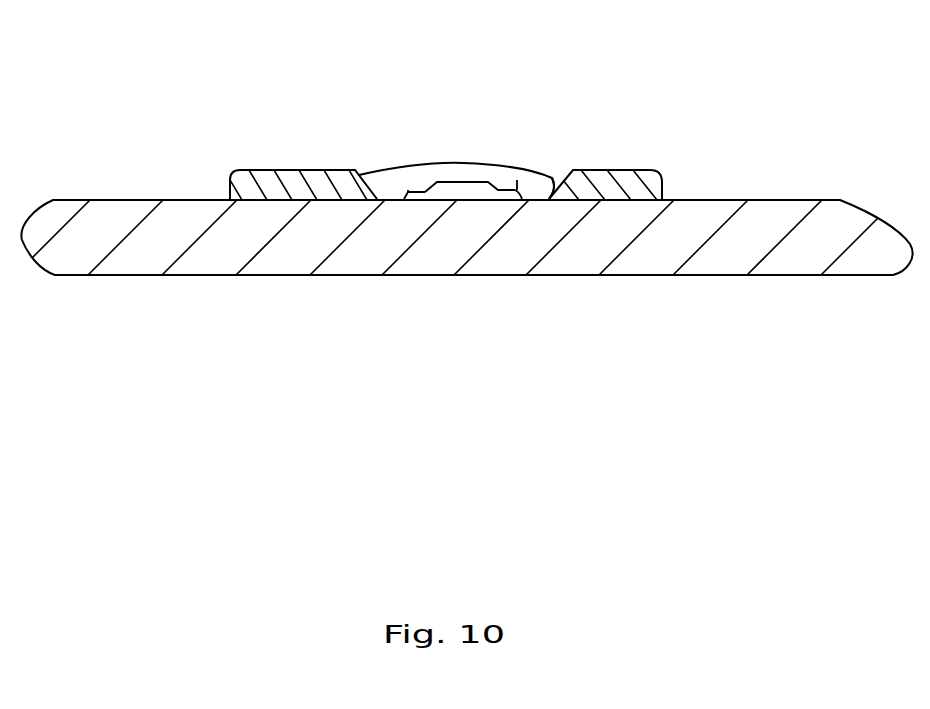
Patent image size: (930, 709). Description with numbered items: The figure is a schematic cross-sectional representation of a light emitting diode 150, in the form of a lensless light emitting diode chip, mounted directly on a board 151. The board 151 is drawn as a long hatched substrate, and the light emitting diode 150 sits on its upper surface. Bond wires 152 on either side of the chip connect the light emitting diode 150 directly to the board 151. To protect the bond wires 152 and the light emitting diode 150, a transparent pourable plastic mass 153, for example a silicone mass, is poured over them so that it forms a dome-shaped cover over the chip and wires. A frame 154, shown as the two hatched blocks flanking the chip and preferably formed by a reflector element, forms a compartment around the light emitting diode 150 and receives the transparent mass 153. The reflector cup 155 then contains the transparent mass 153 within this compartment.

The light emitting diode 150 is at (466, 192).
The board 151 is at (291, 253).
The bond wires 152 is at (408, 190).
The transparent pourable plastic mass 153 is at (445, 173).
The frame 154 is at (314, 180).
The reflector cup 155 is at (553, 178).